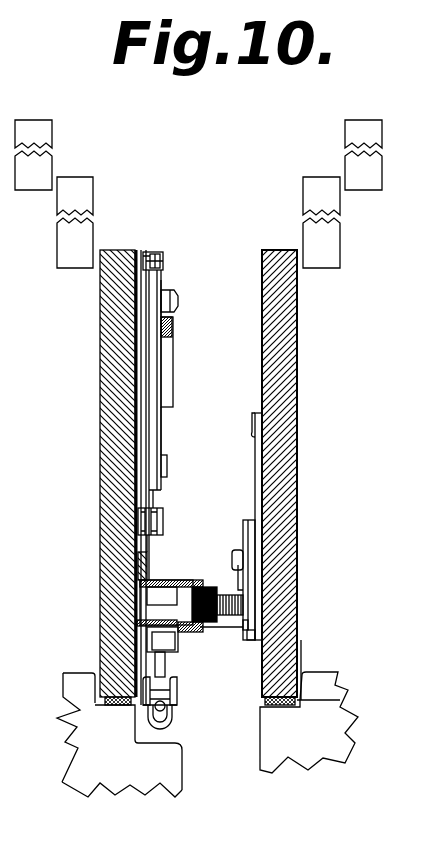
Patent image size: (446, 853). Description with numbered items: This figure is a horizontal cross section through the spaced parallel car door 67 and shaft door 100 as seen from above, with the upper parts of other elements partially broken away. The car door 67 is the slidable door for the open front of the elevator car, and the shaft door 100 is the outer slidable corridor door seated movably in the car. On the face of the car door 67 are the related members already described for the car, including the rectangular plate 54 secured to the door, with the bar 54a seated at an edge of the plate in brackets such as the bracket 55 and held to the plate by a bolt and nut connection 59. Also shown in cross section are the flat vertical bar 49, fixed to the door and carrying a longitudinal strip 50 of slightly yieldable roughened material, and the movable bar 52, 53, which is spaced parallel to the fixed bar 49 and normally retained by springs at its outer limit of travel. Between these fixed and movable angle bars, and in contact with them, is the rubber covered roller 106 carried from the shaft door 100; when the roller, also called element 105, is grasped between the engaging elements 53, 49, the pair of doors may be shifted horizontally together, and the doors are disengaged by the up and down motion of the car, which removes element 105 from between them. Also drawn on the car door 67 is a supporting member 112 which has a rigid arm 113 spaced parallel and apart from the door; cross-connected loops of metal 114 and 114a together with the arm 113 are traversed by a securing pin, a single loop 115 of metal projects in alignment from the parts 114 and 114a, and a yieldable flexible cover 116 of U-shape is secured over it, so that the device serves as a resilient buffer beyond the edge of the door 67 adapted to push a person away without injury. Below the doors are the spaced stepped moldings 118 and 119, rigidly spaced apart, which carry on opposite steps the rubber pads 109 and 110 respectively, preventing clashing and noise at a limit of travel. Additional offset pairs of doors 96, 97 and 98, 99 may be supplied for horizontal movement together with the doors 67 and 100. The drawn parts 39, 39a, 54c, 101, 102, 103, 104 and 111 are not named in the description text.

The auxiliary offset door 97 is at (33, 180).
The auxiliary offset door 96 is at (60, 245).
The auxiliary offset door 99 is at (368, 180).
The auxiliary offset door 98 is at (328, 262).
The car door 67 is at (101, 352).
The rectangular plate 54 is at (142, 428).
The bar 54a is at (147, 447).
The bolt 39a is at (178, 301).
The vane plate 39 is at (172, 357).
The bolt and nut connection 59 is at (167, 468).
The bracket 55 is at (163, 523).
The plate lower flange 54c is at (160, 542).
The movable bar 52 is at (177, 577).
The vertical angle bar 53 is at (182, 576).
The roller element 105 is at (243, 603).
The longitudinal strip 50 is at (190, 634).
The flat vertical bar 49 is at (192, 638).
The supporting member 112 is at (147, 638).
The roller shaft 111 is at (147, 649).
The cross-connected loop of metal 114a is at (178, 694).
The single loop of metal 115 is at (176, 714).
The yieldable flexible cover 116 is at (170, 731).
The rigid arm 113 is at (140, 667).
The cross-connected loop of metal 114 is at (147, 688).
The rubber pad 109 is at (77, 727).
The stepped molding 118 is at (122, 774).
The shaft door 100 is at (297, 352).
The strike plate 101 is at (256, 432).
The bracket 102 is at (248, 542).
The catch 103 is at (243, 560).
The plate 104 is at (238, 573).
The roller 106 is at (253, 628).
The rubber pad 110 is at (342, 702).
The stepped molding 119 is at (309, 722).